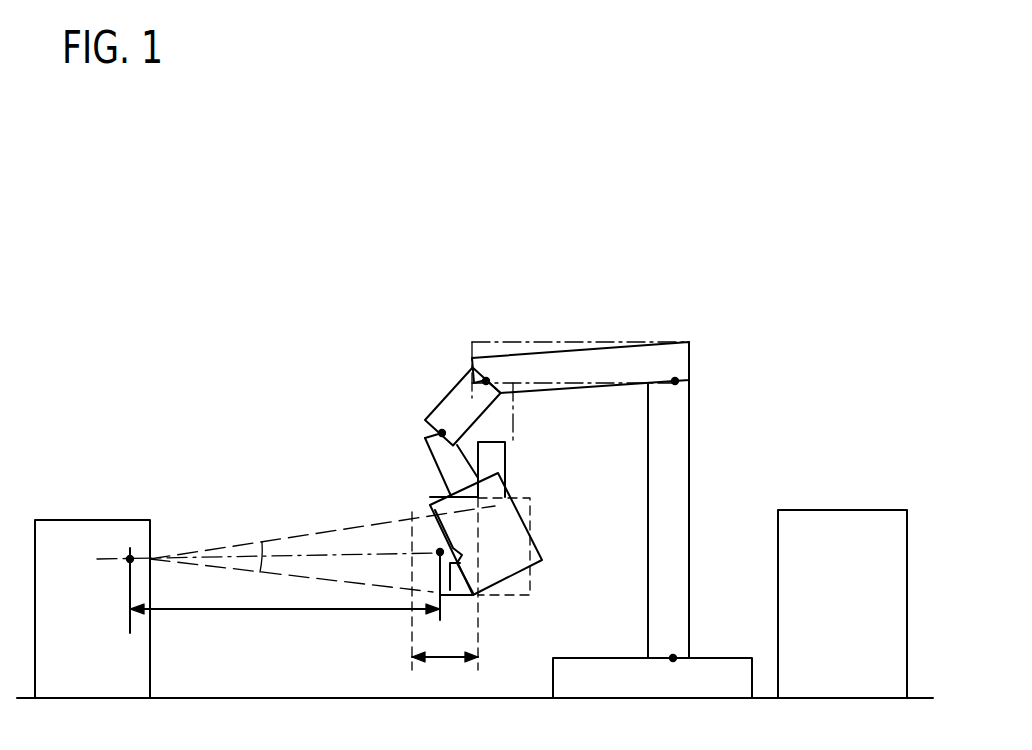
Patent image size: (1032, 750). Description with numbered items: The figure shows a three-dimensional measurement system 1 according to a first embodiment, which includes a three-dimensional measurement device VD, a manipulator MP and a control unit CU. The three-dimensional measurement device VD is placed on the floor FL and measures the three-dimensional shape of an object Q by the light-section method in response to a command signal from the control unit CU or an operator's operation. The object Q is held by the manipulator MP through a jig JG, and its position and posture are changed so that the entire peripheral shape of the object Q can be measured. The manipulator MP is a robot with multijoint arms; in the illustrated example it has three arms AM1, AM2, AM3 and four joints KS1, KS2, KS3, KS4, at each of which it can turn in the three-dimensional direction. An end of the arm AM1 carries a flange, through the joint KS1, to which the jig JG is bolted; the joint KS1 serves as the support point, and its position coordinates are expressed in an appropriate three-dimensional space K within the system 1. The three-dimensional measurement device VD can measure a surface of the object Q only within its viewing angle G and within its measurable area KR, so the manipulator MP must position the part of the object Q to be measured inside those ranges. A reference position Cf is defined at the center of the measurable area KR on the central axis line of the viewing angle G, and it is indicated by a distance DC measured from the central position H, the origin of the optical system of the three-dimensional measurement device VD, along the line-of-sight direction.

The three-dimensional measurement system 1 is at (300, 219).
The three-dimensional space K is at (225, 378).
The arm AM1 is at (462, 398).
The arm AM2 is at (533, 365).
The arm AM3 is at (690, 456).
The joint KS1 is at (442, 433).
The joint KS2 is at (486, 377).
The joint KS3 is at (678, 382).
The joint KS4 is at (672, 658).
The manipulator MP is at (571, 338).
The jig JG is at (441, 463).
The object Q is at (430, 500).
The reference position Cf is at (438, 556).
The viewing angle G is at (266, 540).
The central position (origin) of optical system H is at (131, 554).
The three-dimensional measurement device VD is at (78, 520).
The control unit CU is at (844, 510).
The distance DC is at (285, 626).
The measurable area KR is at (445, 584).
The floor FL is at (475, 678).